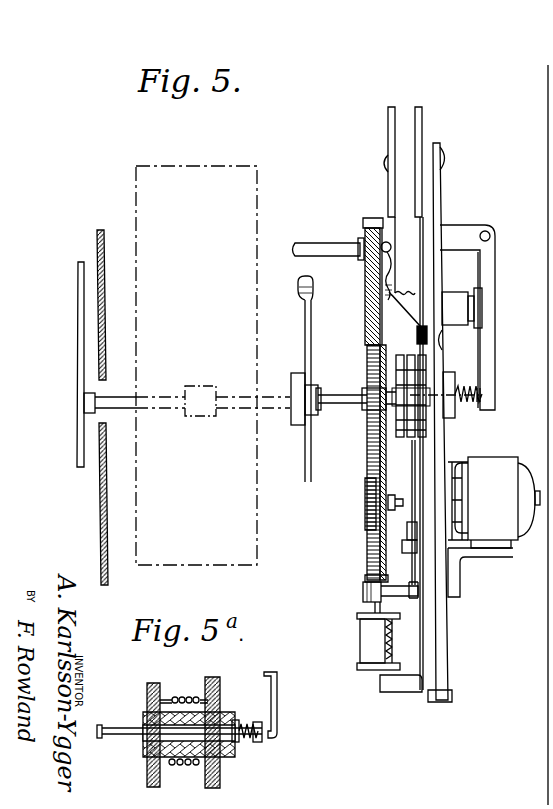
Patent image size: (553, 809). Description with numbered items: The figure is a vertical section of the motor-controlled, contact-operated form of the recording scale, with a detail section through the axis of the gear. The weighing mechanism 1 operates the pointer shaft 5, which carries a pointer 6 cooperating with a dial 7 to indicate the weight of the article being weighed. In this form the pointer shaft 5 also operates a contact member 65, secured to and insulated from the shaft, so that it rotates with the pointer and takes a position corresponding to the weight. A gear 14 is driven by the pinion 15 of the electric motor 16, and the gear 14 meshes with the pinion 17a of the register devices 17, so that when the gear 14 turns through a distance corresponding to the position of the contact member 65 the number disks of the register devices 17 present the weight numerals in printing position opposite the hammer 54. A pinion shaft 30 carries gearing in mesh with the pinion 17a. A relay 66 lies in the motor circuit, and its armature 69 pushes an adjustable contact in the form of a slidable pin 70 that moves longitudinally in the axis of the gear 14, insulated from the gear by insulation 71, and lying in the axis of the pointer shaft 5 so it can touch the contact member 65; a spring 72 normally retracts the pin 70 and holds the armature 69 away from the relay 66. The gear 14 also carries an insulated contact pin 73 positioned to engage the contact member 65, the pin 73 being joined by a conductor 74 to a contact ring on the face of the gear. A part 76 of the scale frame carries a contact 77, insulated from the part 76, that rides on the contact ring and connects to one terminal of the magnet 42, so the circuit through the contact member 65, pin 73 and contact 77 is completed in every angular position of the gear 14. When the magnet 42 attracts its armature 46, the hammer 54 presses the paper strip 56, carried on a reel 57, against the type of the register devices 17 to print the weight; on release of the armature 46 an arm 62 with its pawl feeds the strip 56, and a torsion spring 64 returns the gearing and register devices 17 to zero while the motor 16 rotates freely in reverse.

In FIG. 5, the weighing mechanism 1 is at (200, 170).
In FIG. 5, the pointer shaft 5 is at (296, 426).
In FIG. 5, the pointer 6 is at (78, 422).
In FIG. 5, the dial 7 is at (106, 340).
In FIG. 5, the gear 14 is at (369, 468).
In FIG. 5A, the gear 14 is at (148, 690).
In FIG. 5, the pinion 15 is at (366, 516).
In FIG. 5, the electric motor 16 is at (505, 470).
In FIG. 5, the register devices 17 is at (420, 440).
In FIG. 5, the pinion 17a is at (369, 386).
In FIG. 5, the shaft 30 is at (455, 566).
In FIG. 5, the magnet 42 is at (370, 632).
In FIG. 5, the armature 46 is at (363, 592).
In FIG. 5, the hammer 54 is at (448, 470).
In FIG. 5, the paper strip 56 is at (402, 115).
In FIG. 5, the reel 57 is at (423, 122).
In FIG. 5, the arm 62 is at (418, 536).
In FIG. 5A, the torsion spring 64 is at (178, 698).
In FIG. 5, the contact member 65 is at (312, 326).
In FIG. 5, the relay 66 is at (460, 322).
In FIG. 5, the armature 69 is at (488, 266).
In FIG. 5A, the armature 69 is at (278, 700).
In FIG. 5, the slidable pin 70 is at (346, 404).
In FIG. 5A, the slidable pin 70 is at (121, 738).
In FIG. 5A, the insulation 71 is at (238, 744).
In FIG. 5, the spring 72 is at (470, 406).
In FIG. 5A, the spring 72 is at (262, 746).
In FIG. 5, the contact pin 73 is at (318, 245).
In FIG. 5, the conductor 74 is at (391, 275).
In FIG. 5, the part of scale frame 76 is at (437, 188).
In FIG. 5A, the part of scale frame 76 is at (222, 692).
In FIG. 5, the contact 77 is at (406, 318).